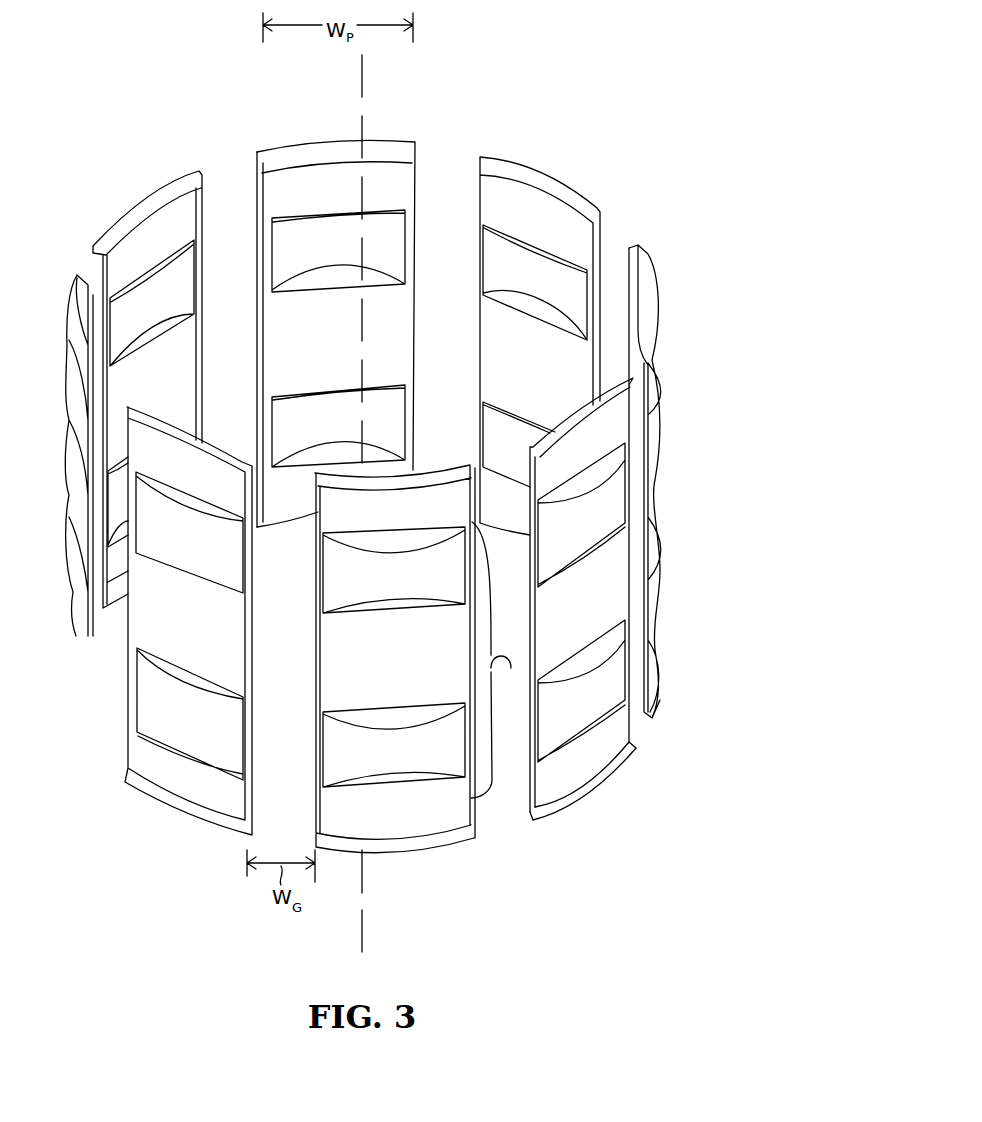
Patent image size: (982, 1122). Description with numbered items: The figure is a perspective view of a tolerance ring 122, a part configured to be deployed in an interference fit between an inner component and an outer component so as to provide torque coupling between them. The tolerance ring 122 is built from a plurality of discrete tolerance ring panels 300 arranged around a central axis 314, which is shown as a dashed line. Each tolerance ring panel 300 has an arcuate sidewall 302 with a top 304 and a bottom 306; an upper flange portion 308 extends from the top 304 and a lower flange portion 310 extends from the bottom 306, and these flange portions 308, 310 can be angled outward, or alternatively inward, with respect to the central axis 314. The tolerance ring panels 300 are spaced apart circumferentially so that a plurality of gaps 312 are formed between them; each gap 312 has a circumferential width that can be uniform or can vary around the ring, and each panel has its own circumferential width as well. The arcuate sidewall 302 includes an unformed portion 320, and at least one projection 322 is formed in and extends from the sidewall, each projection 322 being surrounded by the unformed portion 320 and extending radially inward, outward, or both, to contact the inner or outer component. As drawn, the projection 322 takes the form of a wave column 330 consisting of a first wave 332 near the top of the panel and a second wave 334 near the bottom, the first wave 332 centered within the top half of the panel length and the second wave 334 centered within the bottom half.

The tolerance ring 122 is at (692, 83).
The tolerance ring panel 300 is at (340, 173).
The arcuate sidewall 302 is at (395, 185).
The top 304 is at (280, 190).
The bottom 306 is at (305, 492).
The upper flange portion 308 is at (655, 268).
The lower flange portion 310 is at (580, 800).
The gap 312 is at (437, 177).
The central axis 314 is at (362, 78).
The unformed portion 320 is at (348, 665).
The projection 322 is at (208, 737).
The wave column 330 is at (500, 660).
The first wave 332 is at (390, 585).
The second wave 334 is at (412, 752).